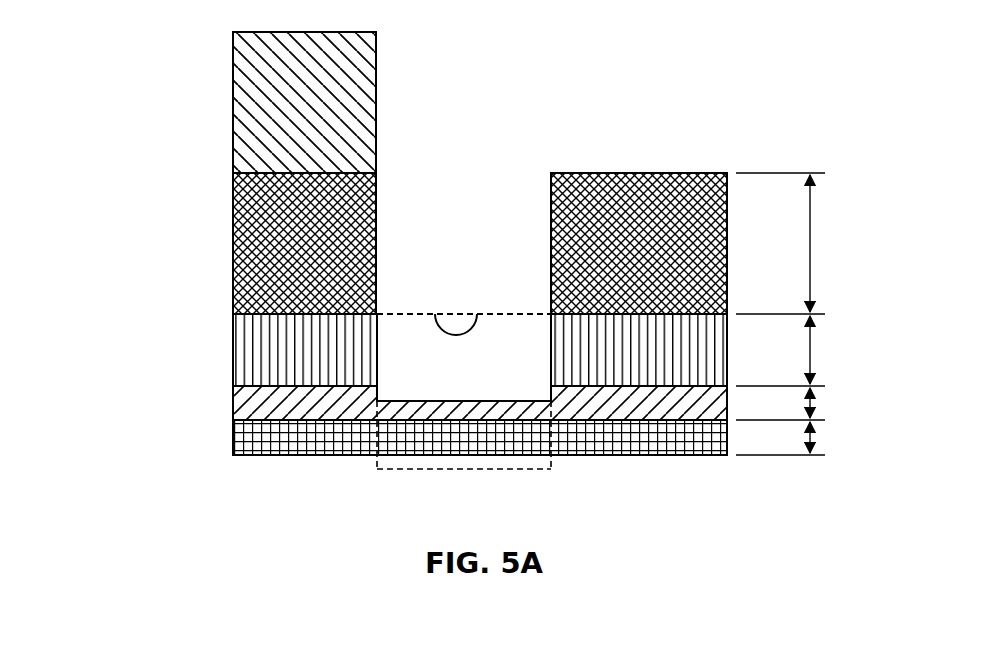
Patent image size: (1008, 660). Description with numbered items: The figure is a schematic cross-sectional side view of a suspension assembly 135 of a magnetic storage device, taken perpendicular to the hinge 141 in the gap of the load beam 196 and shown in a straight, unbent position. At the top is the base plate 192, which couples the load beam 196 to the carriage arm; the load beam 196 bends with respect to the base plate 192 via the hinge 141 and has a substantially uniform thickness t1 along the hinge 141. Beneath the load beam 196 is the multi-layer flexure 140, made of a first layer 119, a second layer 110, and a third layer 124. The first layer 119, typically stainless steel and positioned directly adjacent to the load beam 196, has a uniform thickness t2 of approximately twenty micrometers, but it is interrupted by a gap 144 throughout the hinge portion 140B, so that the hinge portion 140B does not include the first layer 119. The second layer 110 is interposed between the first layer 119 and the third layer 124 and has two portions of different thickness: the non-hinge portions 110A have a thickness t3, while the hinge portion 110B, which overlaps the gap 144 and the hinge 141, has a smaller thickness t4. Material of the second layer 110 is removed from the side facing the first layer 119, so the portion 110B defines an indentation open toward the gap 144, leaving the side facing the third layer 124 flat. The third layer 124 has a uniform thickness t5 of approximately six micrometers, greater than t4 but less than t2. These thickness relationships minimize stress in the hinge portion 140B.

The base plate 192 is at (233, 98).
The load beam 196 is at (233, 226).
The first layer 119 is at (233, 343).
The second layer 110 is at (728, 404).
The third layer 124 is at (233, 433).
The gap 144 is at (444, 360).
The hinge 141 is at (457, 335).
The hinge portion 140B is at (513, 470).
The flexure 140 is at (135, 314).
The non-hinge portions of the second layer 110A is at (311, 424).
The hinge portion of the second layer 110B is at (429, 425).
The suspension assembly 135 is at (700, 485).
The thickness of the load beam t1 is at (810, 243).
The thickness of the first layer t2 is at (810, 348).
The thickness of the non-hinge portion of the second layer t3 is at (810, 400).
The thickness of the hinge portion of the second layer t4 is at (377, 401).
The thickness of the third layer t5 is at (810, 435).